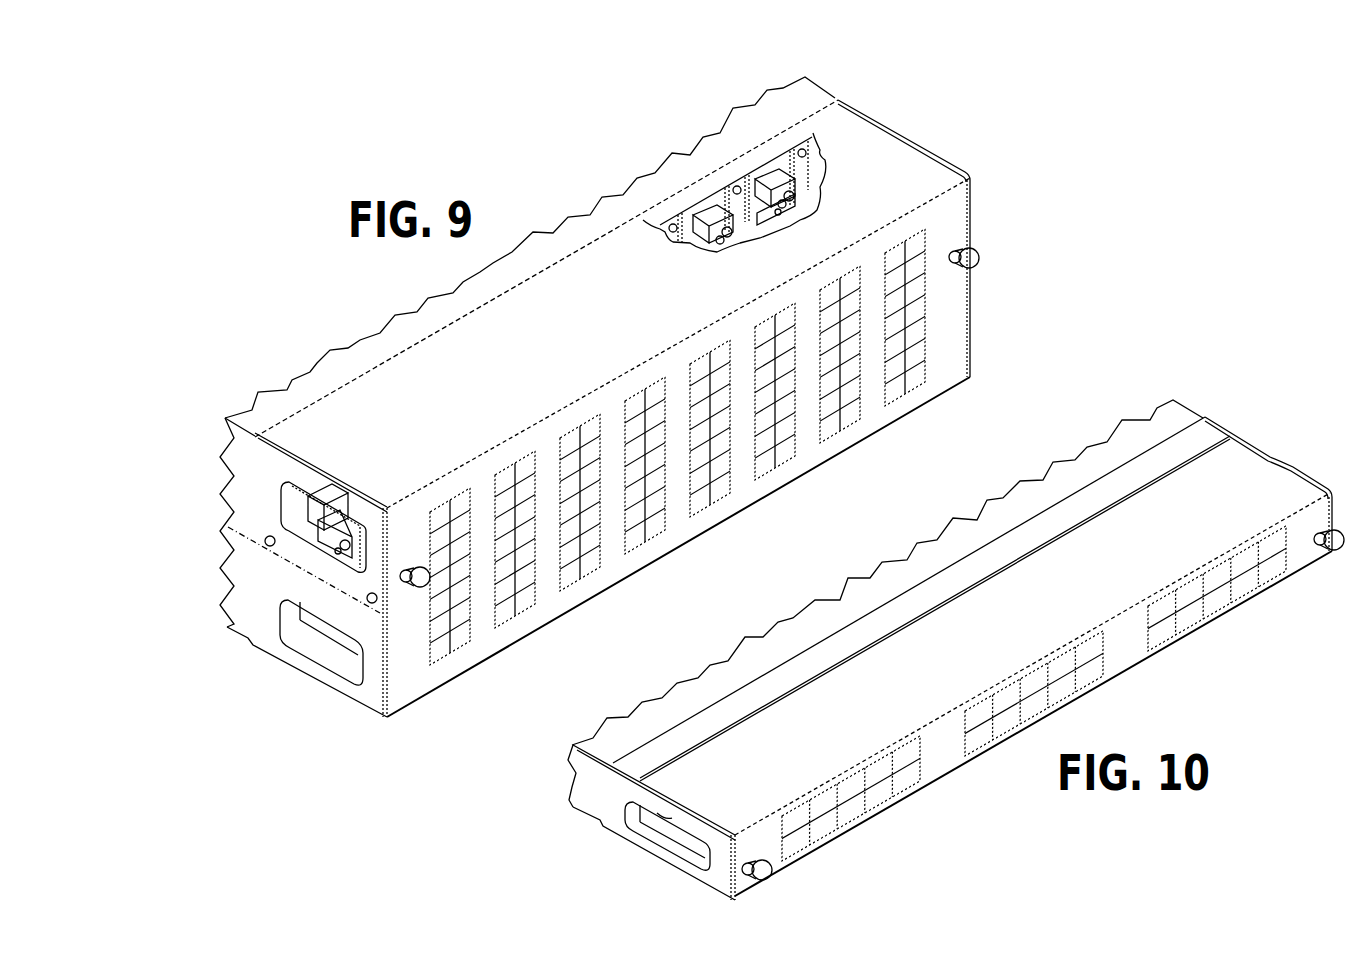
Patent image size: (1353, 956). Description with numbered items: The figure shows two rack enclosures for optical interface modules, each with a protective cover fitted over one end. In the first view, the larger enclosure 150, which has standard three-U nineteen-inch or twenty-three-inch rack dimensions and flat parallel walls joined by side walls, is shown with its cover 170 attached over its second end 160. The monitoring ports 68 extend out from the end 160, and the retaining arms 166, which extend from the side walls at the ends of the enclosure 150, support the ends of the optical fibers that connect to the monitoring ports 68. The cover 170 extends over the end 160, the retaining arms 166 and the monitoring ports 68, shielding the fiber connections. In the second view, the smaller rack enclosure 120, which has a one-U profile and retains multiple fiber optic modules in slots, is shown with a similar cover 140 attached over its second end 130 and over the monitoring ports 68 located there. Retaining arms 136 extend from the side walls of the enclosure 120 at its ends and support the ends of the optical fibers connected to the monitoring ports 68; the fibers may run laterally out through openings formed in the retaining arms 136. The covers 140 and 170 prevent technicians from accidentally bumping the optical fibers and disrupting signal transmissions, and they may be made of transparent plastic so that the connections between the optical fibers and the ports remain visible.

In FIG. 9, the enclosure 150 is at (788, 108).
In FIG. 9, the second end 160 is at (830, 103).
In FIG. 9, the cover 170 is at (898, 155).
In FIG. 9, the monitoring ports 68 is at (771, 175).
In FIG. 9, the retaining arms 166 is at (325, 677).
In FIG. 10, the rack enclosure 120 is at (1160, 427).
In FIG. 10, the second end 130 is at (1192, 422).
In FIG. 10, the cover 140 is at (1270, 480).
In FIG. 10, the retaining arms 136 is at (667, 855).